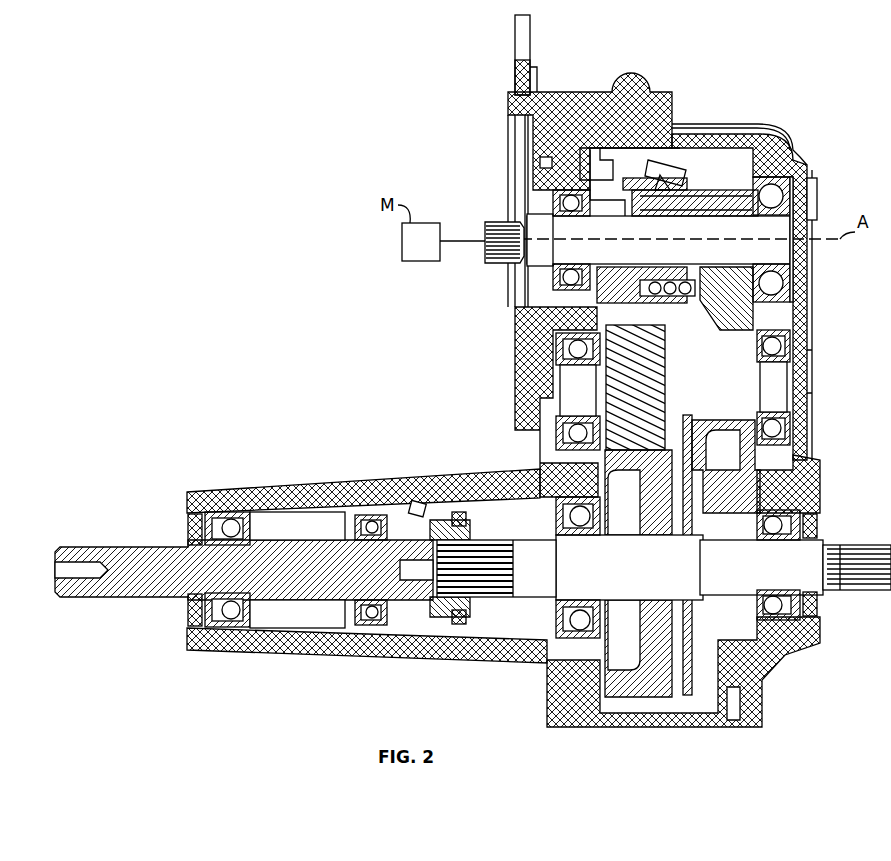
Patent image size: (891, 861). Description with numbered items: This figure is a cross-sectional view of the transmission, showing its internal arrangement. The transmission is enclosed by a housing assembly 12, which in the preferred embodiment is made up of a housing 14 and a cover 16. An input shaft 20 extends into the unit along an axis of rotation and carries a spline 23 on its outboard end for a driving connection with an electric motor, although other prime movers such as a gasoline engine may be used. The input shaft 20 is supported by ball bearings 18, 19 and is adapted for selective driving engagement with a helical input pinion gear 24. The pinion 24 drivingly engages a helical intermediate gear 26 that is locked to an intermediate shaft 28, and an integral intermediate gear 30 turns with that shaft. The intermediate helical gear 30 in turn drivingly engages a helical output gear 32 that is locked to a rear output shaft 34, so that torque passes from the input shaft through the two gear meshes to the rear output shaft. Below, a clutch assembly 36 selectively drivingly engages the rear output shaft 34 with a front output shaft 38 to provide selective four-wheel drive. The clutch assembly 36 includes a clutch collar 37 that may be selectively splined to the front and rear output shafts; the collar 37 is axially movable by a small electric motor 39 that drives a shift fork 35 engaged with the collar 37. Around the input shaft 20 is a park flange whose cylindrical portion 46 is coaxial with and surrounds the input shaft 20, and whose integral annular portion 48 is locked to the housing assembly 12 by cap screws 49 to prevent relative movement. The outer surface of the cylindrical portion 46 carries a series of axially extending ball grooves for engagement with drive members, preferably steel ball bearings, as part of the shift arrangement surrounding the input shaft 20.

The housing assembly 12 is at (228, 478).
The housing 14 is at (470, 487).
The cover 16 is at (805, 475).
The ball bearing 18 is at (770, 190).
The ball bearing 19 is at (548, 188).
The input shaft 20 is at (775, 228).
The spline 23 is at (495, 265).
The helical input pinion gear 24 is at (718, 185).
The helical intermediate gear 26 is at (740, 332).
The intermediate shaft 28 is at (570, 395).
The integral intermediate gear 30 is at (630, 358).
The helical output gear 32 is at (630, 685).
The rear output shaft 34 is at (815, 560).
The shift fork 35 is at (470, 515).
The clutch assembly 36 is at (447, 622).
The clutch collar 37 is at (460, 620).
The front output shaft 38 is at (130, 555).
The small electric motor 39 is at (415, 502).
The cylindrical portion 46 is at (515, 345).
The annular portion 48 is at (533, 152).
The cap screws 49 is at (600, 157).